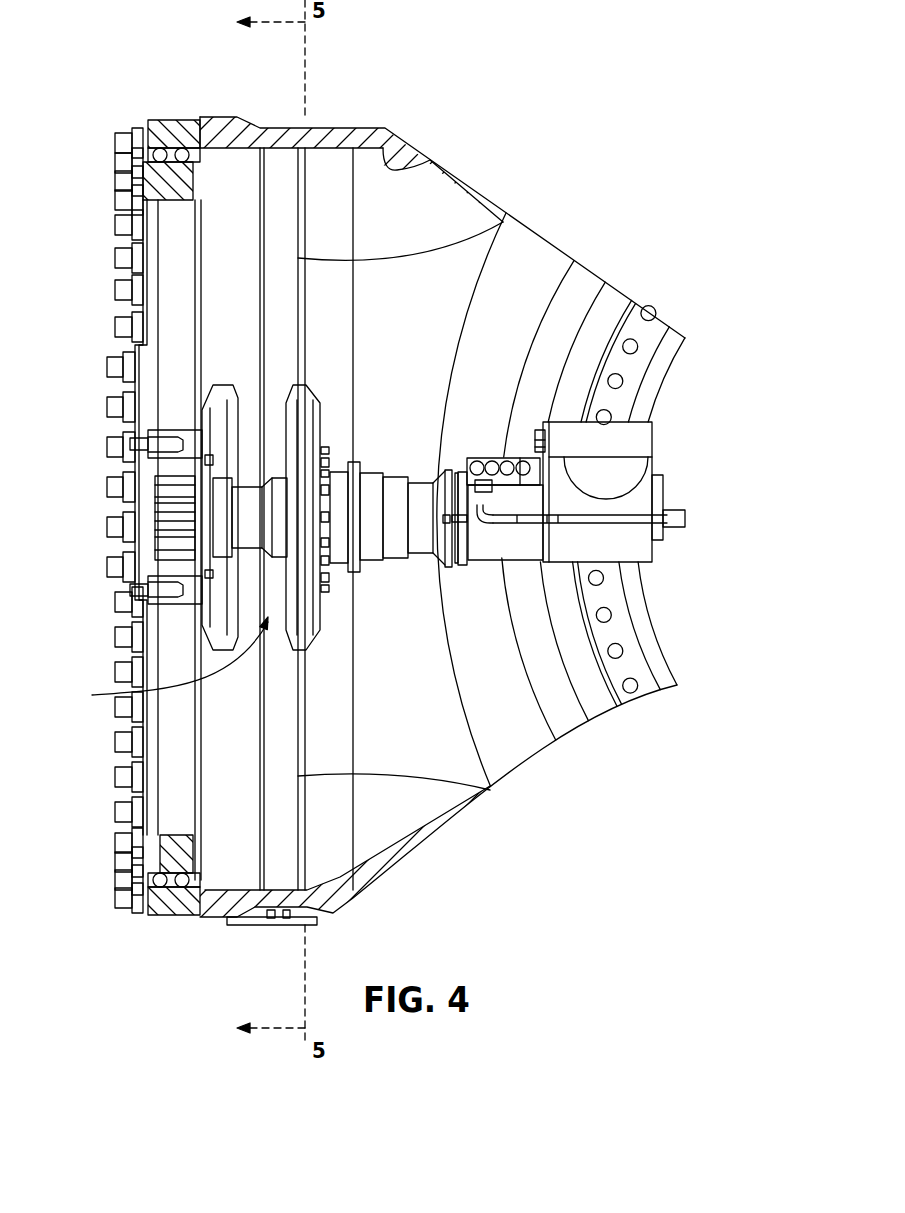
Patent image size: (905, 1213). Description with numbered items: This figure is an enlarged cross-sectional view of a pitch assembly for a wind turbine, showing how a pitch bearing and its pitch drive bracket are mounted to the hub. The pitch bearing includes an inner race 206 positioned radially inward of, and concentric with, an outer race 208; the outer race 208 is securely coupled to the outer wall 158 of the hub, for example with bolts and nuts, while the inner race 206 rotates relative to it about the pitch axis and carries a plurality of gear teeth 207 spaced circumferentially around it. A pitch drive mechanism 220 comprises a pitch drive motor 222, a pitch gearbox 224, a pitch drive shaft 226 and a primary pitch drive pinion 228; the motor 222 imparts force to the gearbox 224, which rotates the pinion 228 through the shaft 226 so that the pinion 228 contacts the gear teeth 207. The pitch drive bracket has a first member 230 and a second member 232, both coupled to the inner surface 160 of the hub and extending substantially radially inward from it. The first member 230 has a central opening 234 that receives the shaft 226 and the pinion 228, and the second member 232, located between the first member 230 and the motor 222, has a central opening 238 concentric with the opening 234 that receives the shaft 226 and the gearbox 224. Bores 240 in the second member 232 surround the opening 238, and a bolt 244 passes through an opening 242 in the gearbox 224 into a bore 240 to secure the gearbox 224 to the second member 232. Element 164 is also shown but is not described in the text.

The outer wall 158 is at (372, 124).
The inner surface 160 is at (412, 162).
The upper bearing block 164 is at (183, 118).
The inner race 206 is at (148, 866).
The gear teeth 207 is at (170, 266).
The outer race 208 is at (145, 125).
The pitch drive mechanism 220 is at (682, 412).
The pitch drive motor 222 is at (642, 442).
The pitch gearbox 224 is at (400, 548).
The pitch drive shaft 226 is at (159, 663).
The primary pitch drive pinion 228 is at (165, 485).
The first member 230 is at (240, 388).
The second member 232 is at (310, 670).
The central opening 234 is at (228, 478).
The central opening 238 is at (327, 480).
The bores 240 is at (328, 597).
The opening 242 is at (333, 455).
The bolt 244 is at (330, 547).